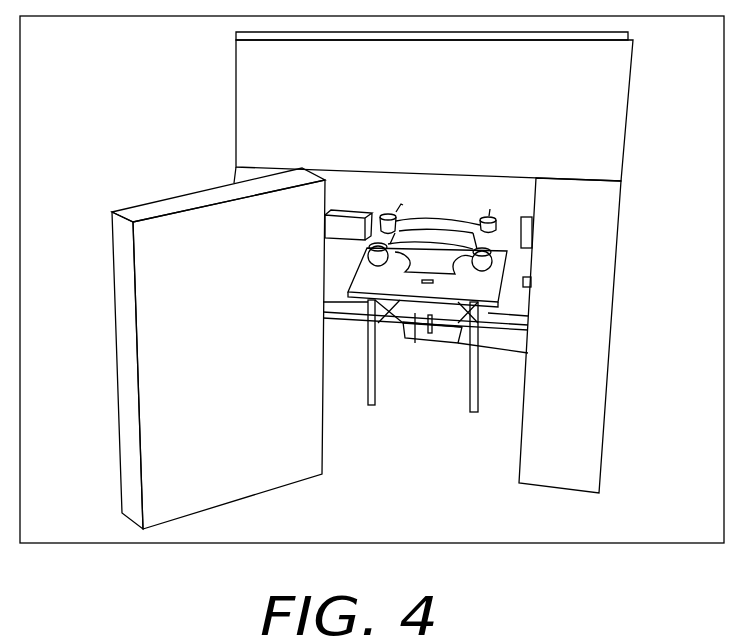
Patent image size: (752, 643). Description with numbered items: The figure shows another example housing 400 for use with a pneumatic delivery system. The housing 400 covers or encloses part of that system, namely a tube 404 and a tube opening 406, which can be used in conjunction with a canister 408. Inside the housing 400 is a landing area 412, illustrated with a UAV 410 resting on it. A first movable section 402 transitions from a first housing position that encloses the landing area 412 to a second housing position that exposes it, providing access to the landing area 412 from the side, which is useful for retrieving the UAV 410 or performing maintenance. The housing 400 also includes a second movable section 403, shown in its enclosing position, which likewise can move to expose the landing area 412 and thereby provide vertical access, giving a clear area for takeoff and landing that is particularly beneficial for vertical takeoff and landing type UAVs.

The housing 400 is at (648, 144).
The movable section 402 is at (175, 245).
The second movable section 403 is at (268, 82).
The tube 404 is at (506, 342).
The tube opening 406 is at (420, 335).
The canister 408 is at (408, 343).
The UAV 410 is at (450, 245).
The landing area 412 is at (447, 288).